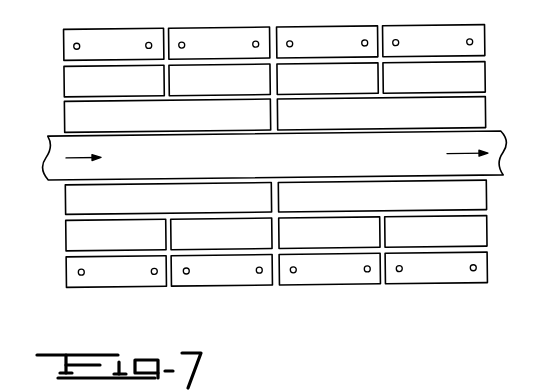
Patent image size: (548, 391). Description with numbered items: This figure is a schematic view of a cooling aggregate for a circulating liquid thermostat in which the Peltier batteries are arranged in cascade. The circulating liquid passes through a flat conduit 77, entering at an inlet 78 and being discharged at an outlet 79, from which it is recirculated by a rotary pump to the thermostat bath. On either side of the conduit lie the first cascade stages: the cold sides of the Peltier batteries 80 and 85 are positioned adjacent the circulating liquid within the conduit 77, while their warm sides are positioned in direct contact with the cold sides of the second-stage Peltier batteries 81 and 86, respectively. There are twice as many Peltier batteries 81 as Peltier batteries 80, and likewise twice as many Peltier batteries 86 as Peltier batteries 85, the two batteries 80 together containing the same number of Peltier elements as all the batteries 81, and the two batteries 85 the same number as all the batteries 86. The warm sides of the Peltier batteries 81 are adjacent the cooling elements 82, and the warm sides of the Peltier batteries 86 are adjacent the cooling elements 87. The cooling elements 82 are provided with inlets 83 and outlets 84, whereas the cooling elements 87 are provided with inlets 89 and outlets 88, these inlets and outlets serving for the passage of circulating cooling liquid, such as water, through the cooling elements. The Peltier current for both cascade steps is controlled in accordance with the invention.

The flat conduit 77 is at (269, 164).
The inlet 78 is at (46, 158).
The outlet 79 is at (503, 148).
The Peltier battery 80 is at (156, 122).
The Peltier battery 81 is at (274, 79).
The cooling element 82 is at (108, 52).
The inlet 83 is at (78, 41).
The outlet 84 is at (152, 41).
The Peltier battery 85 is at (159, 206).
The Peltier battery 86 is at (109, 241).
The cooling element 87 is at (109, 276).
The outlet 88 is at (80, 273).
The inlet 89 is at (153, 273).